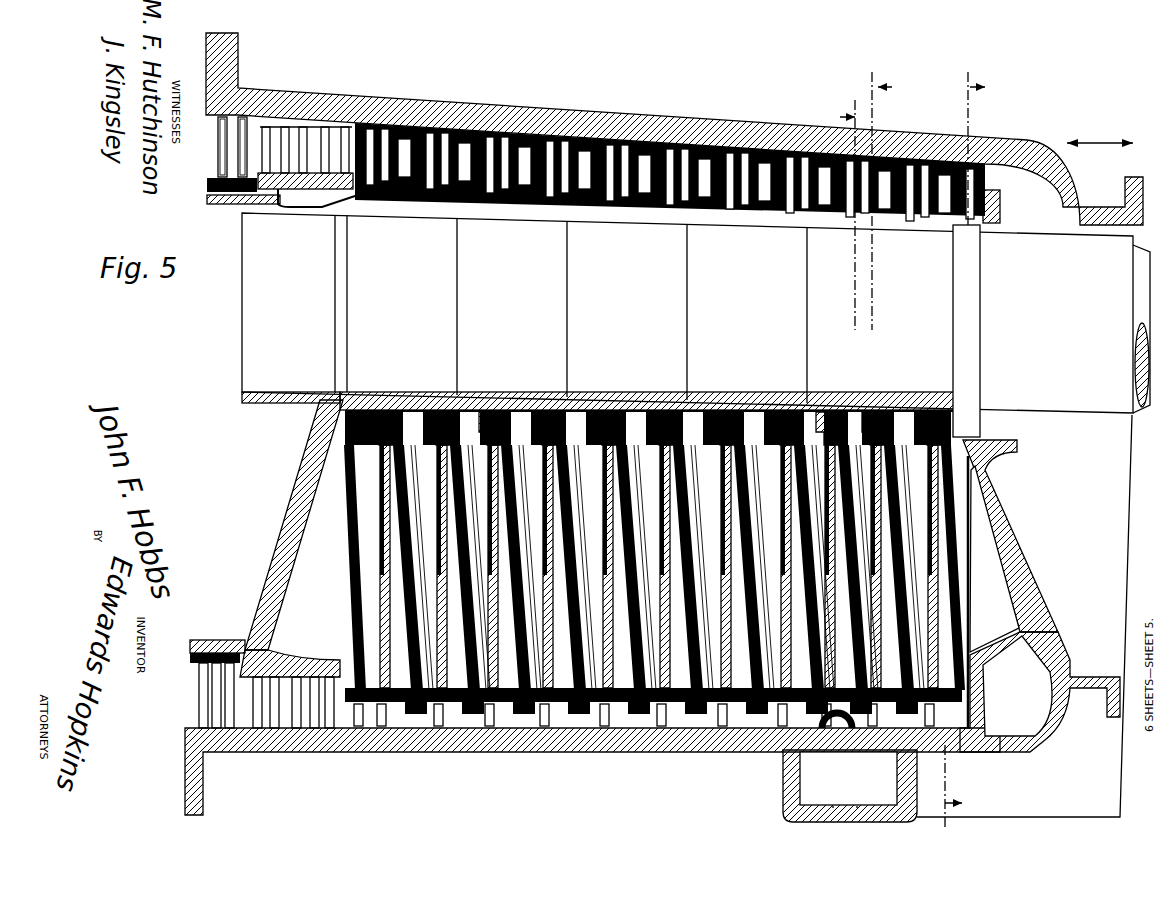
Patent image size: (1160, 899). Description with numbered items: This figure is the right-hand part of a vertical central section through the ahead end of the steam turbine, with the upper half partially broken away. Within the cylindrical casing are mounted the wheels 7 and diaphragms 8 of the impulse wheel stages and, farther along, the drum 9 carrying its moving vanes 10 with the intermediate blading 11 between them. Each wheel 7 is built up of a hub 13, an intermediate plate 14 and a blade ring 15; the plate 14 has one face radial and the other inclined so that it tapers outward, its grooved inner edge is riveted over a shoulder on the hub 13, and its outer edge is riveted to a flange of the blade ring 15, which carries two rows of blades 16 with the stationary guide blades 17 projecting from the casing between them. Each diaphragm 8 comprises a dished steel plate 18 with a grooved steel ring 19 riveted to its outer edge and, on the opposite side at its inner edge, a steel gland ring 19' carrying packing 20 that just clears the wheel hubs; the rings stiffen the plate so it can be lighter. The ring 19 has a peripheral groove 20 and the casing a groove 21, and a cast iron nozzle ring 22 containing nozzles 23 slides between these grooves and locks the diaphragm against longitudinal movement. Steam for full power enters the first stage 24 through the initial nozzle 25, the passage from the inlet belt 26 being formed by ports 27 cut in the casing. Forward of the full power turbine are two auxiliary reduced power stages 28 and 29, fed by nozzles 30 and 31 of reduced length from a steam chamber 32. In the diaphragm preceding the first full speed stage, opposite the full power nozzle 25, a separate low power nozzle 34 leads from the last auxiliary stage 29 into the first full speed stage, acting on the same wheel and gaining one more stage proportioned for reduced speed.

The wheels 7 is at (440, 468).
The diaphragms 8 is at (350, 530).
The drum 9 is at (290, 517).
The moving vanes 10 is at (238, 645).
The intermediate blading 11 is at (330, 715).
The hub 13 is at (384, 394).
The intermediate plate 14 is at (385, 462).
The blade ring 15 is at (375, 650).
The blades 16 is at (360, 720).
The stationary guide blades 17 is at (375, 725).
The steel plate 18 is at (455, 532).
The grooved steel ring 19 is at (493, 670).
The steel gland ring 19' is at (465, 379).
The packing / peripheral groove 20 is at (480, 400).
The casing groove 21 is at (490, 745).
The nozzle ring 22 is at (460, 730).
The nozzles 23 is at (430, 730).
The first stage 24 is at (800, 640).
The nozzle 25 is at (812, 725).
The inlet belt 26 is at (883, 777).
The ports 27 is at (806, 740).
The auxiliary wheel or stage 28 is at (990, 192).
The auxiliary wheel or stage 29 is at (905, 202).
The nozzle 30 is at (1040, 738).
The nozzle 31 is at (980, 750).
The steam chamber 32 is at (1017, 686).
The low power nozzle 34 is at (847, 163).